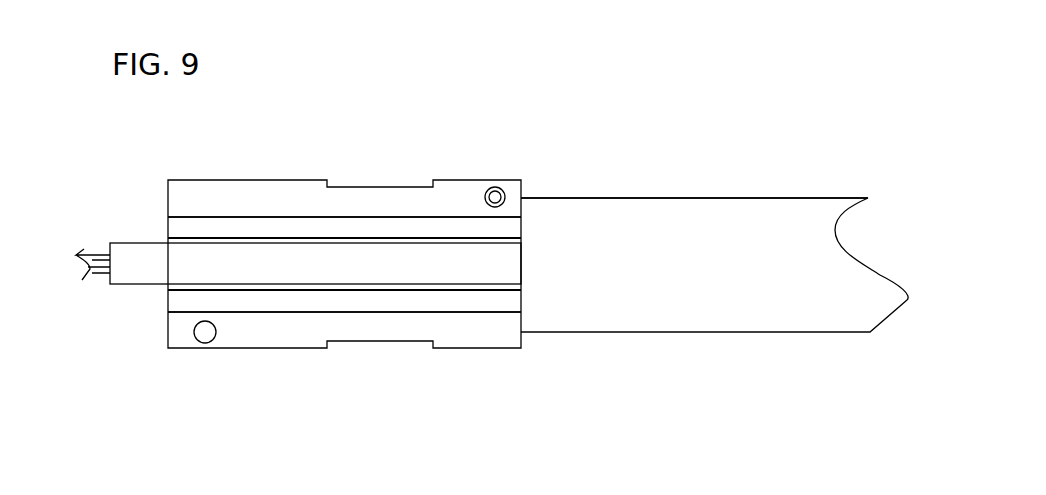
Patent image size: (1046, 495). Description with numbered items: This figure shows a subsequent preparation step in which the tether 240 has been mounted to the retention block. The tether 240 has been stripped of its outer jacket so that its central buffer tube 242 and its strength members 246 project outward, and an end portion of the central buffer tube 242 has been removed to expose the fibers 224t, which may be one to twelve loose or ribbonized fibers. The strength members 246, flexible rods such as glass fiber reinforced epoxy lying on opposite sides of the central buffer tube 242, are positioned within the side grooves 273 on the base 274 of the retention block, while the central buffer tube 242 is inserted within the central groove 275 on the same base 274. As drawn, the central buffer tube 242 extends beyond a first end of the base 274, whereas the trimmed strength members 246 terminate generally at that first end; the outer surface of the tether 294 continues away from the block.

The fibers 224t is at (93, 255).
The tether 240 is at (778, 240).
The central buffer tube 242 is at (147, 250).
The strength members 246 is at (183, 222).
The side grooves 273 is at (313, 215).
The base 274 is at (483, 179).
The central groove 275 is at (385, 243).
The outer surface of shaft 294 is at (627, 183).